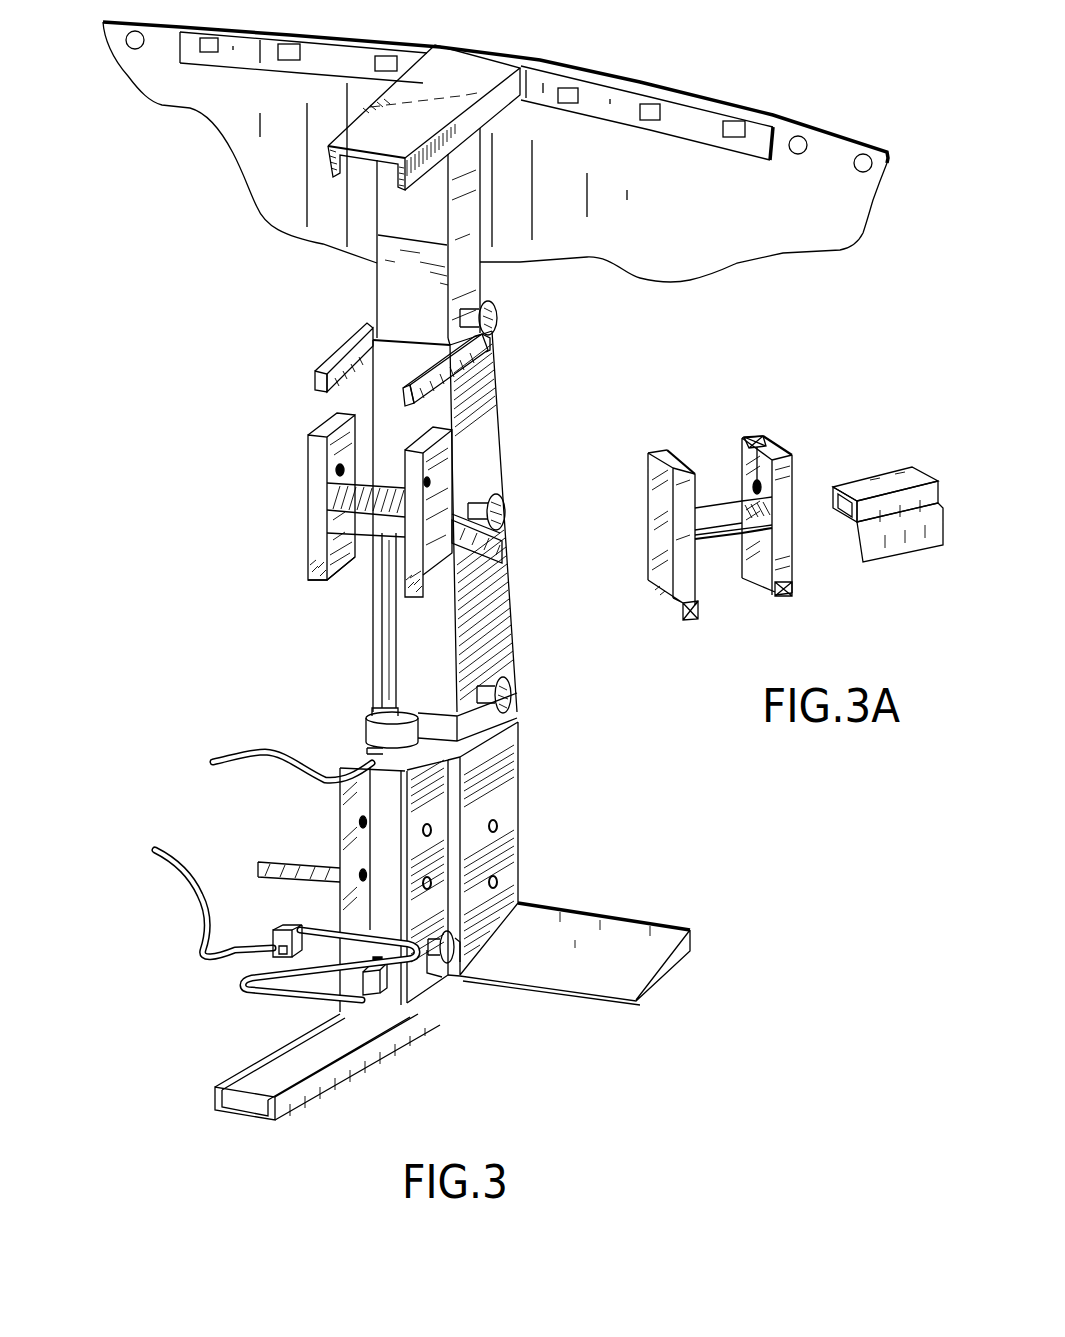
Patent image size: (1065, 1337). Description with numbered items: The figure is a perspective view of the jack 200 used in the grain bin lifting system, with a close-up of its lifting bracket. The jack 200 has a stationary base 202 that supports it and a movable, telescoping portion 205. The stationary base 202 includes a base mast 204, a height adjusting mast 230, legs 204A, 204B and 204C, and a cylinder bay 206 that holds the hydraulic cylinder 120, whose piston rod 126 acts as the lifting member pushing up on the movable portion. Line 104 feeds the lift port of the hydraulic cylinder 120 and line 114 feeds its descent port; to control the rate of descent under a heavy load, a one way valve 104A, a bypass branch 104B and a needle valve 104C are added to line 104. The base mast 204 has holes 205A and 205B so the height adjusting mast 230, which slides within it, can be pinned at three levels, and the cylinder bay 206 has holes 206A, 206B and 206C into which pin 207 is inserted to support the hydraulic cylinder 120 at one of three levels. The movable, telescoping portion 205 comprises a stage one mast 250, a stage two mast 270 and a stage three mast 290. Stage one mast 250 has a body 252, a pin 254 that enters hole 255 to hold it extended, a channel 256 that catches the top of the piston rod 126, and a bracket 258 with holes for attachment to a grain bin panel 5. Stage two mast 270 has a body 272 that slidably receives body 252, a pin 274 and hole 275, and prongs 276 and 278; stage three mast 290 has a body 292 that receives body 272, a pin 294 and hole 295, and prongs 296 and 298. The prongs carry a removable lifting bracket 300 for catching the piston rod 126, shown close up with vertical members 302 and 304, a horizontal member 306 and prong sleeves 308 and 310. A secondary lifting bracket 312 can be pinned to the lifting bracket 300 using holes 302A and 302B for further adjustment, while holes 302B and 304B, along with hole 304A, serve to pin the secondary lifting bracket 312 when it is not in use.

In FIG. 3, the grain bin panel 5 is at (158, 104).
In FIG. 3, the bracket 258 is at (536, 76).
In FIG. 3, the channel 256 is at (415, 142).
In FIG. 3, the stage one mast 250 is at (486, 191).
In FIG. 3, the body 252 is at (468, 227).
In FIG. 3, the hole 255 is at (460, 313).
In FIG. 3, the pin 254 is at (500, 316).
In FIG. 3, the prong 276 is at (488, 343).
In FIG. 3, the body 272 is at (483, 360).
In FIG. 3, the prong 278 is at (348, 353).
In FIG. 3, the stage two mast 270 is at (494, 380).
In FIG. 3, the jack 200 is at (260, 361).
In FIG. 3, the lifting bracket 300 is at (304, 489).
In FIG. 3A, the lifting bracket 300 is at (792, 444).
In FIG. 3, the prong 298 is at (310, 570).
In FIG. 3, the hole 275 is at (472, 500).
In FIG. 3, the pin 274 is at (500, 492).
In FIG. 3, the prong 296 is at (504, 512).
In FIG. 3, the stage three mast 290 is at (508, 537).
In FIG. 3, the body 292 is at (483, 557).
In FIG. 3, the piston rod 126 is at (378, 633).
In FIG. 3, the hole 295 is at (478, 680).
In FIG. 3, the pin 294 is at (506, 680).
In FIG. 3, the height adjusting mast 230 is at (510, 708).
In FIG. 3, the hydraulic cylinder 120 is at (354, 762).
In FIG. 3, the line 114 is at (233, 756).
In FIG. 3, the stationary base 202 is at (526, 772).
In FIG. 3, the cylinder bay 206 is at (435, 763).
In FIG. 3, the base mast 204 is at (508, 722).
In FIG. 3, the hole 206C is at (432, 832).
In FIG. 3, the hole 205B is at (497, 829).
In FIG. 3, the hole 206B is at (432, 884).
In FIG. 3, the hole 205A is at (497, 892).
In FIG. 3, the pin 207 is at (460, 940).
In FIG. 3, the leg 204A is at (647, 973).
In FIG. 3, the hole 206A is at (431, 967).
In FIG. 3, the needle valve 104C is at (390, 985).
In FIG. 3, the leg 204C is at (330, 1060).
In FIG. 3, the line 104 is at (193, 877).
In FIG. 3, the bypass branch 104B is at (258, 995).
In FIG. 3, the one way valve 104A is at (280, 929).
In FIG. 3, the leg 204B is at (270, 865).
In FIG. 3A, the movable telescoping portion 205 is at (628, 408).
In FIG. 3A, the vertical member 302 is at (648, 555).
In FIG. 3A, the hole 302B is at (672, 507).
In FIG. 3A, the prong sleeve 308 is at (697, 620).
In FIG. 3A, the vertical member 304 is at (790, 567).
In FIG. 3A, the hole 304B is at (757, 440).
In FIG. 3A, the prong sleeve 310 is at (797, 600).
In FIG. 3A, the horizontal member 306 is at (718, 503).
In FIG. 3A, the hole 302A is at (700, 542).
In FIG. 3A, the hole 304A is at (738, 552).
In FIG. 3A, the secondary lifting bracket 312 is at (900, 470).